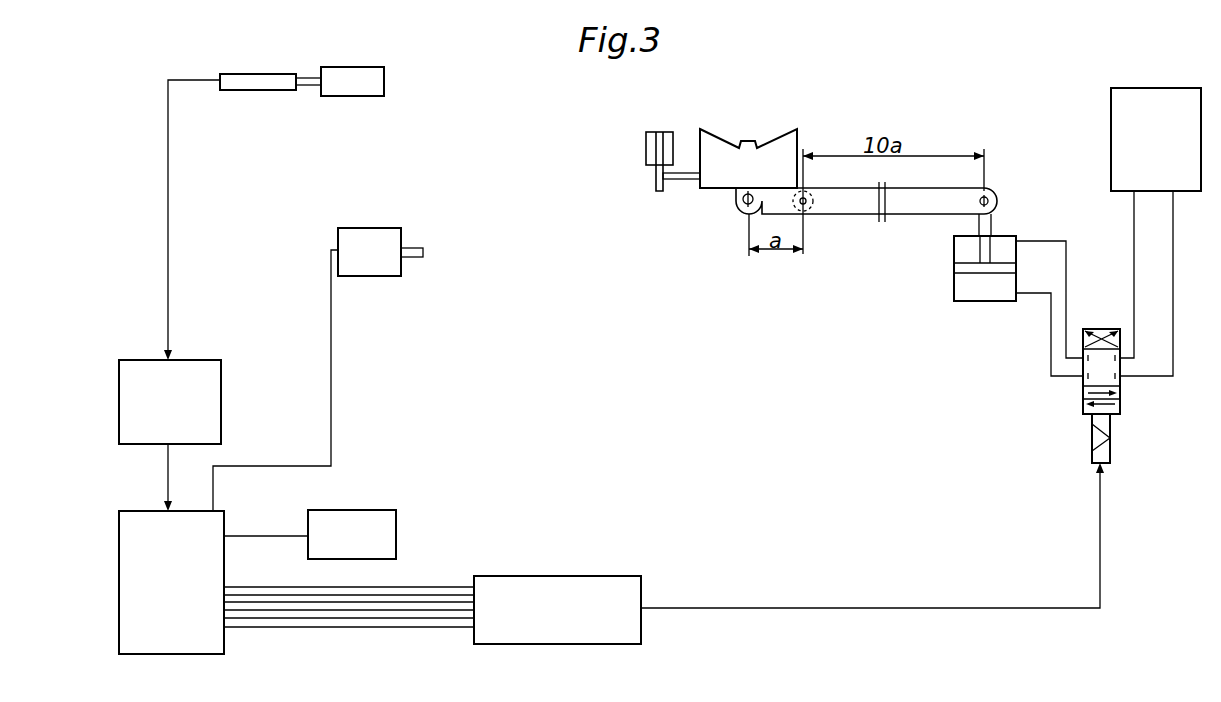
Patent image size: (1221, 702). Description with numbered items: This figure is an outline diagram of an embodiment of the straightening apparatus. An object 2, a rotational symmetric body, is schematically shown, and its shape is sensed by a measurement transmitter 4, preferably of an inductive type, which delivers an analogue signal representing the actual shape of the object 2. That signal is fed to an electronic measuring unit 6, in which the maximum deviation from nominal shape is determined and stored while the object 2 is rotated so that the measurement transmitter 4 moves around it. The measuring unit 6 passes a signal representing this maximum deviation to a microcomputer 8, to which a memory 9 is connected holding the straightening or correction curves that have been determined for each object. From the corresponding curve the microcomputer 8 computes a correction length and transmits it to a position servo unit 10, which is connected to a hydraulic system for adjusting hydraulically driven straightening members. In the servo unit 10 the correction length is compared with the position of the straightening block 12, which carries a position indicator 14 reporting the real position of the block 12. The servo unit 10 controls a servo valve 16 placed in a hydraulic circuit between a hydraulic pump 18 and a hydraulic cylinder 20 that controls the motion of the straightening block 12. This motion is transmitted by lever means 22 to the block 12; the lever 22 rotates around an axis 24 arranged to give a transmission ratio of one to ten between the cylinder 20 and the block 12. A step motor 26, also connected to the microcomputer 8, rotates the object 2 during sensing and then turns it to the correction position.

The object 2 is at (362, 87).
The measurement transmitter 4 is at (257, 80).
The electronic measuring unit 6 is at (187, 405).
The microcomputer 8 is at (195, 552).
The memory 9 is at (368, 527).
The position servo unit 10 is at (590, 587).
The straightening block 12 is at (713, 148).
The position indicator 14 is at (650, 152).
The servo valve 16 is at (1095, 372).
The hydraulic pump 18 is at (1137, 140).
The hydraulic cylinder 20 is at (972, 273).
The lever means 22 is at (910, 202).
The axis 24 is at (804, 204).
The step motor 26 is at (367, 238).